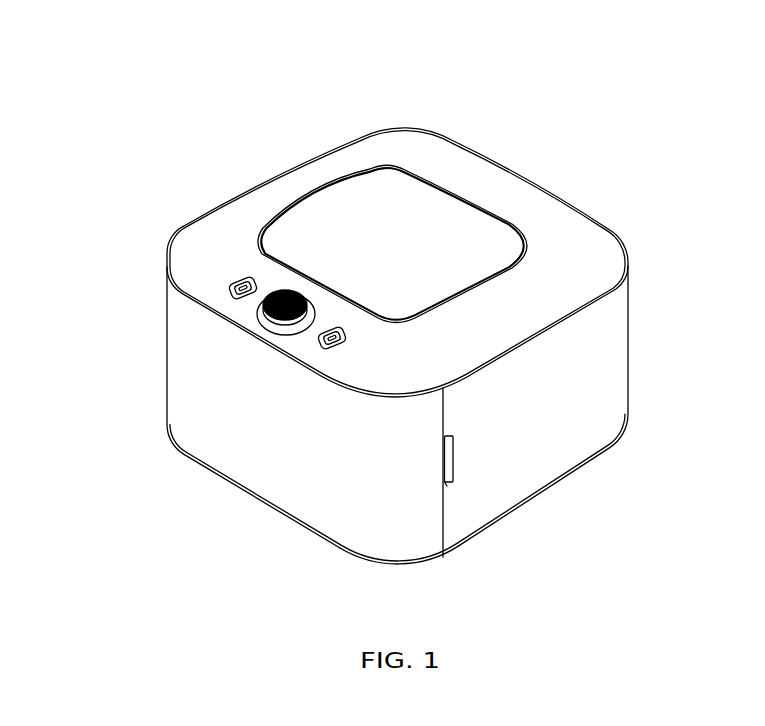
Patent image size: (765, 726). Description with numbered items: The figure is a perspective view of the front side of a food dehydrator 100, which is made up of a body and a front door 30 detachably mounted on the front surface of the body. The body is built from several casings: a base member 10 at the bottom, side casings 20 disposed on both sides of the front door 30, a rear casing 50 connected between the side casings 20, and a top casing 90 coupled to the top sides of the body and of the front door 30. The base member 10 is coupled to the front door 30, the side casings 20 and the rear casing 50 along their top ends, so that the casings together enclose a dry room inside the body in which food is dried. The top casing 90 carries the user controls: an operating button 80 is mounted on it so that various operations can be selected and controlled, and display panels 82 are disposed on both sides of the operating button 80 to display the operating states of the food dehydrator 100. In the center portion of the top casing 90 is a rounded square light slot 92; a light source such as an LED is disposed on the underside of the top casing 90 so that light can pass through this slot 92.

The food dehydrator 100 is at (219, 106).
The base member 10 is at (437, 557).
The side casings 20 is at (570, 455).
The front door 30 is at (213, 462).
The rear casing 50 is at (550, 190).
The operating button 80 is at (264, 308).
The display panels 82 is at (229, 283).
The top casing 90 is at (478, 178).
The rounded square light slot 92 is at (372, 168).